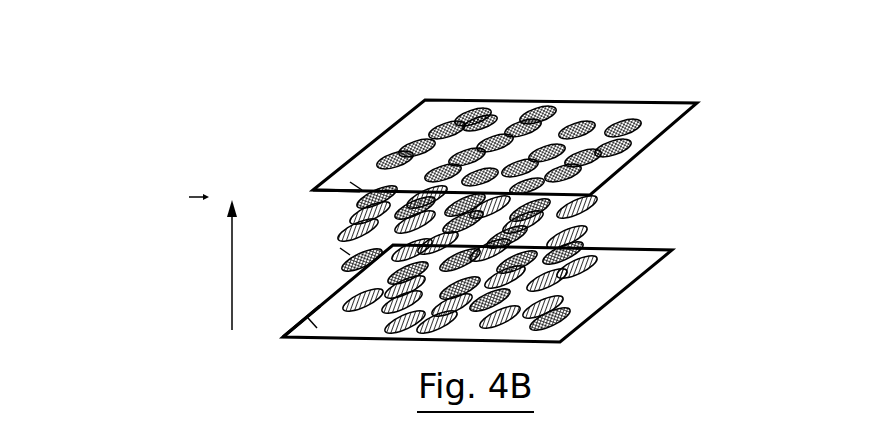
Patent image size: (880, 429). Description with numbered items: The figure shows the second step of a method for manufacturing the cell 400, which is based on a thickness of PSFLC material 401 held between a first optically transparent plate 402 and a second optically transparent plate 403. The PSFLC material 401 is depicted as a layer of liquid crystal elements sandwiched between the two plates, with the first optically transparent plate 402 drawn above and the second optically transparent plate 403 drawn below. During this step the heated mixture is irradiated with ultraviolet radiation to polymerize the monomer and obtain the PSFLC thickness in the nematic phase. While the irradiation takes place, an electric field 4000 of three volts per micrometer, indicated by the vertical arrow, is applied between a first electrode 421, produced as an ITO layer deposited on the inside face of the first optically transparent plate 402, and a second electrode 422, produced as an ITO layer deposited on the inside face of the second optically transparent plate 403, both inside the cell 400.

The cell 400 is at (313, 122).
The first optically transparent plate 402 is at (658, 103).
The PSFLC material 401 is at (625, 217).
The second optically transparent plate 403 is at (633, 283).
The first electrode 421 is at (322, 194).
The second electrode 422 is at (300, 317).
The electric field 4000 is at (232, 285).